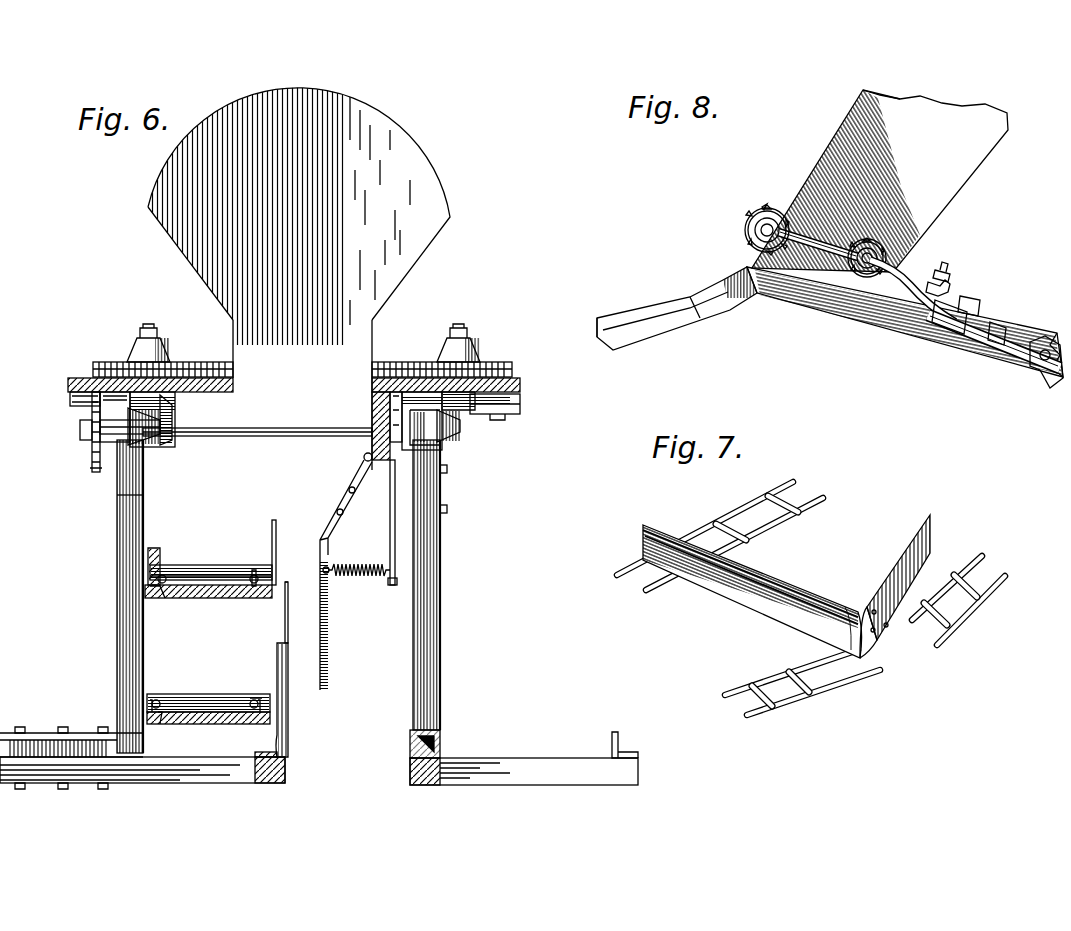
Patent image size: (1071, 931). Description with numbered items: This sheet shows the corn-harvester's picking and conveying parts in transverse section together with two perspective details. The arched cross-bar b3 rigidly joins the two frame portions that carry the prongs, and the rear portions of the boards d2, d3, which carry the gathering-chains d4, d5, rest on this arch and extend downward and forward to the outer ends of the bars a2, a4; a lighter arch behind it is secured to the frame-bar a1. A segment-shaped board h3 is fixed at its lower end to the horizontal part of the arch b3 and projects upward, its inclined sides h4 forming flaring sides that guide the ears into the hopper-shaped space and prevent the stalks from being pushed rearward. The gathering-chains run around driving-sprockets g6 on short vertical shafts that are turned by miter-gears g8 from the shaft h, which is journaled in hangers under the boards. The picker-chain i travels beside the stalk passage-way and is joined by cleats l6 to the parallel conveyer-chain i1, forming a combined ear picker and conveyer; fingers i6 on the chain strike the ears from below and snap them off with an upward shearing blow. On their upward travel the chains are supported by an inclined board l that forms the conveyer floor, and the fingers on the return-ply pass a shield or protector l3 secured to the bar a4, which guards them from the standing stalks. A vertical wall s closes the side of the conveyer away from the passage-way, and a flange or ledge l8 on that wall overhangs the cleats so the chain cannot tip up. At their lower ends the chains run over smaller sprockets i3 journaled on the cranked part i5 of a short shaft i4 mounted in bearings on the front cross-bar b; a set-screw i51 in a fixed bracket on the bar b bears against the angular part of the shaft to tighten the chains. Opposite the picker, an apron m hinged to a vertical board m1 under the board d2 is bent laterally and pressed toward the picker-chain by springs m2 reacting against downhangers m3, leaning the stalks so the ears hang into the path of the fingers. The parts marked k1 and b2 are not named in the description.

In FIG. 6, the inclined sides h4 is at (180, 256).
In FIG. 6, the segment-shaped board h3 is at (302, 395).
In FIG. 6, the shaft h is at (282, 438).
In FIG. 6, the driving-sprockets g6 is at (125, 366).
In FIG. 6, the gathering-chain d5 is at (217, 368).
In FIG. 6, the gathering-chain d4 is at (402, 370).
In FIG. 6, the board d3 is at (92, 390).
In FIG. 6, the board d2 is at (500, 398).
In FIG. 6, the vertical shaft k1 is at (90, 456).
In FIG. 6, the miter-gears g8 is at (172, 438).
In FIG. 6, the board m1 is at (372, 404).
In FIG. 6, the downhangers m3 is at (396, 503).
In FIG. 6, the apron m is at (345, 523).
In FIG. 6, the springs m2 is at (360, 578).
In FIG. 6, the arched cross-bar b3 is at (118, 572).
In FIG. 6, the vertical wall s is at (148, 500).
In FIG. 6, the flange or ledge l8 is at (156, 548).
In FIG. 6, the cleats l6 is at (188, 566).
In FIG. 7, the cleats l6 is at (745, 598).
In FIG. 6, the picker-chain i is at (254, 574).
In FIG. 7, the picker-chain i is at (965, 588).
In FIG. 6, the fingers i6 is at (277, 533).
In FIG. 7, the fingers i6 is at (910, 552).
In FIG. 6, the inclined board l is at (198, 598).
In FIG. 8, the inclined board l is at (942, 190).
In FIG. 6, the shield or protector l3 is at (289, 650).
In FIG. 6, the conveyer-chain i1 is at (160, 590).
In FIG. 7, the conveyer-chain i1 is at (770, 522).
In FIG. 6, the frame-bar a1 is at (10, 735).
In FIG. 6, the base beam b2 is at (160, 785).
In FIG. 6, the fore-and-aft bar a4 is at (270, 784).
In FIG. 6, the bar a2 is at (425, 786).
In FIG. 8, the front cross-bar b is at (886, 310).
In FIG. 8, the cranked part i5 is at (815, 263).
In FIG. 8, the sprockets i3 is at (746, 217).
In FIG. 8, the set-screw i51 is at (950, 276).
In FIG. 8, the short shaft i4 is at (985, 345).